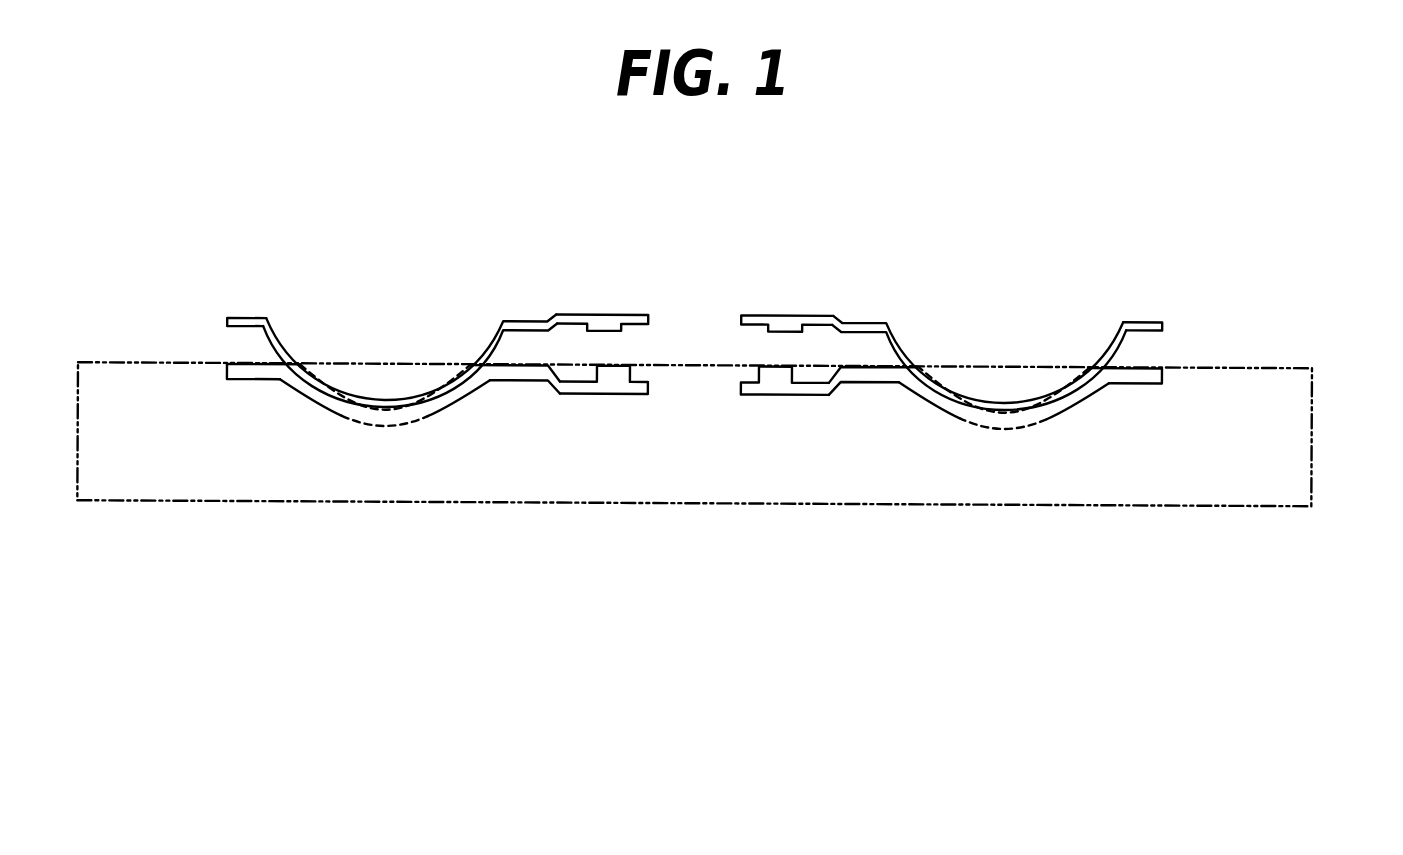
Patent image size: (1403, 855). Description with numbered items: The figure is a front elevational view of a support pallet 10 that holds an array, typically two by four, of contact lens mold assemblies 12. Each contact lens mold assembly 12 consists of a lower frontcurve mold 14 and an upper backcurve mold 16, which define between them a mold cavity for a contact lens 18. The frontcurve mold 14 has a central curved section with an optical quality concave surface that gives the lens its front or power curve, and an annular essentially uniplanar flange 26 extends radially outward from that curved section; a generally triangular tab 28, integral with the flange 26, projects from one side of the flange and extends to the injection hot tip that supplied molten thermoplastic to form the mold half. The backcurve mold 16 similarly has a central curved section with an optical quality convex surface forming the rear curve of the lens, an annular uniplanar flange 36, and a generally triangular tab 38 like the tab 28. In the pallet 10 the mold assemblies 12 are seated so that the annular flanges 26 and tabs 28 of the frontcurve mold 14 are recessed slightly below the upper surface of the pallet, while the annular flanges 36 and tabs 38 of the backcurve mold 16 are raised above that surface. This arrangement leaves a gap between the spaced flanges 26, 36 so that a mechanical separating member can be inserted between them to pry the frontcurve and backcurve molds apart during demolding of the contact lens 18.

The support pallet 10 is at (160, 501).
The contact lens mold assembly 12 is at (268, 392).
The frontcurve mold 14 is at (695, 434).
The backcurve mold 16 is at (709, 293).
The contact lens 18 is at (373, 408).
The annular flange 26 is at (236, 379).
The triangular tab 28 is at (767, 393).
The annular flange 36 is at (240, 318).
The triangular tab 38 is at (751, 313).